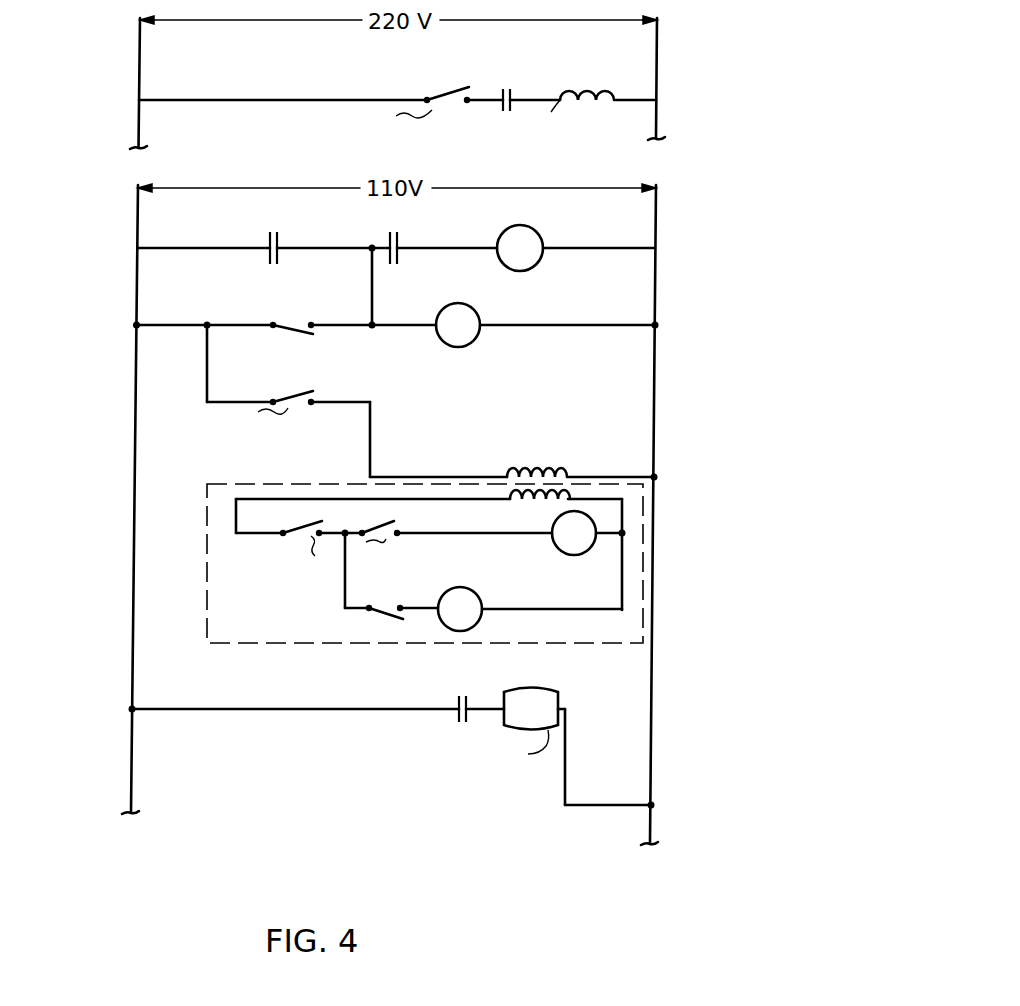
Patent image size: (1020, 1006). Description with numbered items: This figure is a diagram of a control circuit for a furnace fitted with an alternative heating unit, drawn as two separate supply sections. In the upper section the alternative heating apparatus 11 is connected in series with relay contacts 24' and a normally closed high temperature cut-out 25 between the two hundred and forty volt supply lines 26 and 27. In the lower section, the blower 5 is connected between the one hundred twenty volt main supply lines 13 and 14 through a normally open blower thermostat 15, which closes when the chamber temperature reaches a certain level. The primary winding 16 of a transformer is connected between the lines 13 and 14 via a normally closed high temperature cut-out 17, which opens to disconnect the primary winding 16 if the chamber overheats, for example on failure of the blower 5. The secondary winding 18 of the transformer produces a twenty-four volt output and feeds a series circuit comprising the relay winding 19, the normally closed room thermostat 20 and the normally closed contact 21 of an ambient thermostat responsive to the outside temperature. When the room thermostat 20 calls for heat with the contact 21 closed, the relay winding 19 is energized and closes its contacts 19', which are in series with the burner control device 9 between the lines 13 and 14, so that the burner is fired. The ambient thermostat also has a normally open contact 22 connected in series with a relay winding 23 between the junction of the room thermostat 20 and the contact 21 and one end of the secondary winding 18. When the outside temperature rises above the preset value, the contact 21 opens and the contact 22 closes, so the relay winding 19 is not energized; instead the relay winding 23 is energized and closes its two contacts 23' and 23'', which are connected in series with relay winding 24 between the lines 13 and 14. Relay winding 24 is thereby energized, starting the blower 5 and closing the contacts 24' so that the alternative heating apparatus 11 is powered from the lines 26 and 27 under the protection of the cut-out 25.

The blower 5 is at (476, 344).
The burner control device 9 is at (540, 692).
The alternative heating apparatus 11 is at (596, 94).
The main supply line 13 is at (135, 465).
The main supply line 14 is at (656, 389).
The normally open thermostat 15 is at (300, 339).
The primary winding 16 is at (568, 466).
The high temperature cut-out 17 is at (333, 400).
The secondary winding 18 is at (567, 505).
The relay winding 19 is at (571, 555).
The relay contacts 19' is at (467, 691).
The room thermostat 20 is at (297, 530).
The normally closed contact 21 is at (387, 523).
The normally open contact 22 is at (368, 609).
The relay winding 23 is at (477, 599).
The relay contact 23' is at (244, 238).
The relay contact 23'' is at (420, 238).
The relay winding 24 is at (544, 242).
The relay contacts 24' is at (521, 79).
The high temperature cut-out 25 is at (435, 90).
The 240 volt supply line 26 is at (138, 124).
The 240 volt supply line 27 is at (657, 130).